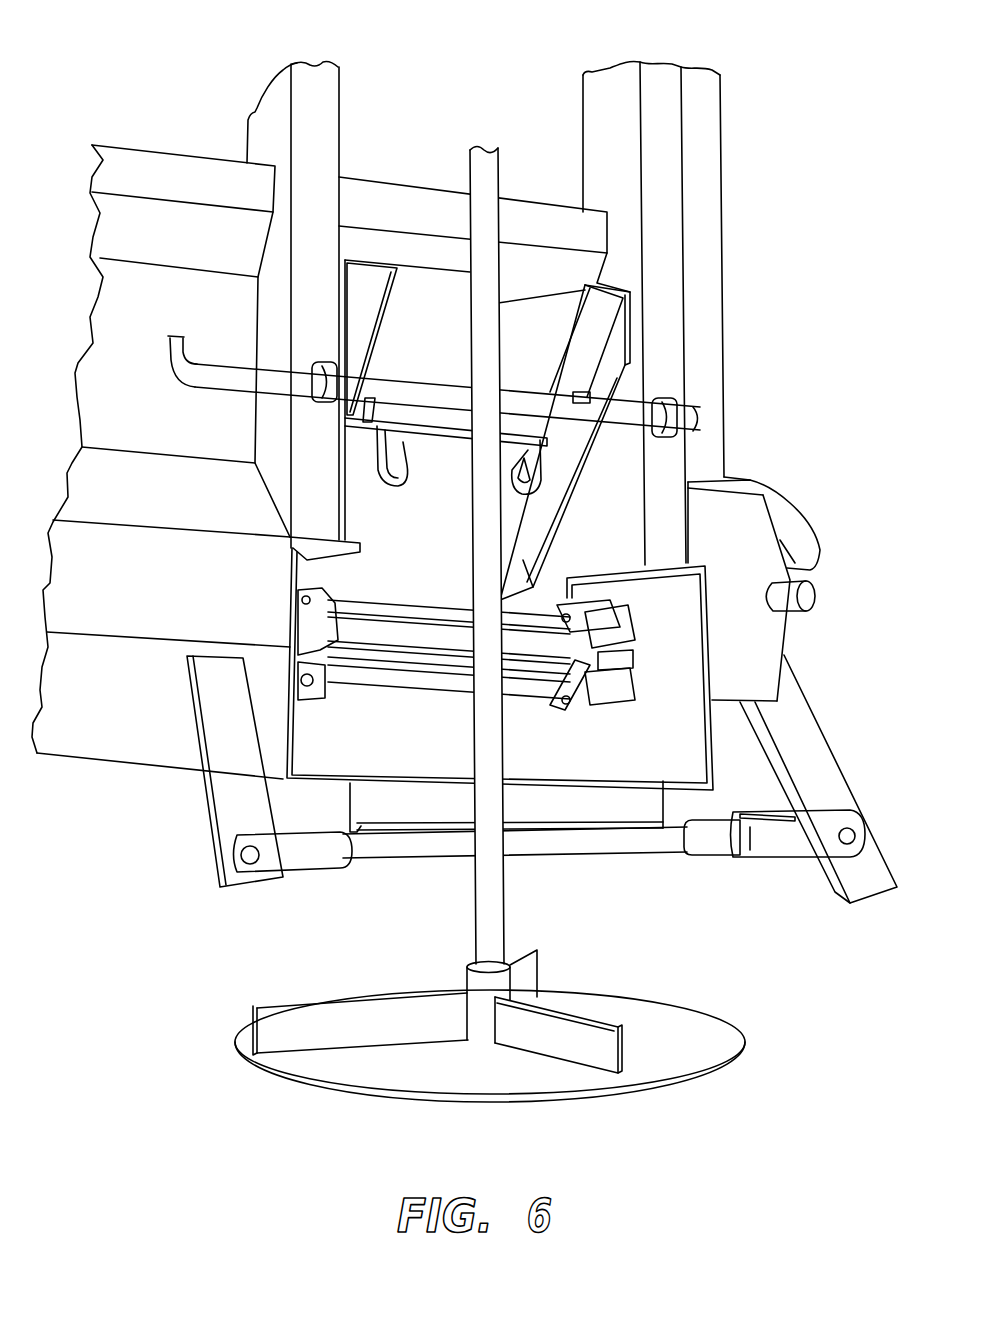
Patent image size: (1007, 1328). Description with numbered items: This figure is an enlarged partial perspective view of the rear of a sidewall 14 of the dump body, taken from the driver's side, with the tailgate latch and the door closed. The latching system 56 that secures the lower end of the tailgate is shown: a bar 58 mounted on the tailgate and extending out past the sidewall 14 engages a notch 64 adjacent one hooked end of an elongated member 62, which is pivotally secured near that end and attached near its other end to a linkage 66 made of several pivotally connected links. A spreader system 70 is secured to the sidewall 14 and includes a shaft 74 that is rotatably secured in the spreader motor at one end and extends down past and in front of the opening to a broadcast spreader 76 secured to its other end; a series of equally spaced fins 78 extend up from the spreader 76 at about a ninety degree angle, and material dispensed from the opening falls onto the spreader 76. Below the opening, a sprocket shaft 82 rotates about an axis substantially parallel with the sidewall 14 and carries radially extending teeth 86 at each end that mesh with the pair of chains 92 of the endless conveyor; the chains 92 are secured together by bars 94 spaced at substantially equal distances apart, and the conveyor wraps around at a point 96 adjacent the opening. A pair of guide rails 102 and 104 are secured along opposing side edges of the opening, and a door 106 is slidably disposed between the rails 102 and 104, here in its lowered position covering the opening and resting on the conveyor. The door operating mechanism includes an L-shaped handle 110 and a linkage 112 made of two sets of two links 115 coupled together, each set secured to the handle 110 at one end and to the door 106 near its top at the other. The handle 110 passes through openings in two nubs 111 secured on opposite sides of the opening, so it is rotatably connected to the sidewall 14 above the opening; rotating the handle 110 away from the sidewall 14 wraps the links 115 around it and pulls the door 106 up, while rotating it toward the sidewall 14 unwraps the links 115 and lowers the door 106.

The sidewall 14 is at (173, 421).
The latching system 56 is at (800, 477).
The bar 58 is at (810, 597).
The elongated member 62 is at (793, 713).
The notch 64 is at (790, 567).
The linkage 66 is at (227, 807).
The spreader system 70 is at (467, 745).
The shaft 74 is at (486, 171).
The broadcast spreader 76 is at (468, 1065).
The fins 78 is at (390, 1018).
The sprocket shaft 82 is at (633, 660).
The teeth 86 is at (297, 623).
The chains 92 is at (602, 613).
The bars 94 is at (388, 673).
The wrap point 96 is at (522, 660).
The guide rail 102 is at (380, 312).
The guide rail 104 is at (547, 512).
The door 106 is at (442, 537).
The L-shaped handle 110 is at (221, 358).
The nubs 111 is at (318, 360).
The linkage 112 is at (522, 458).
The links 115 is at (377, 450).